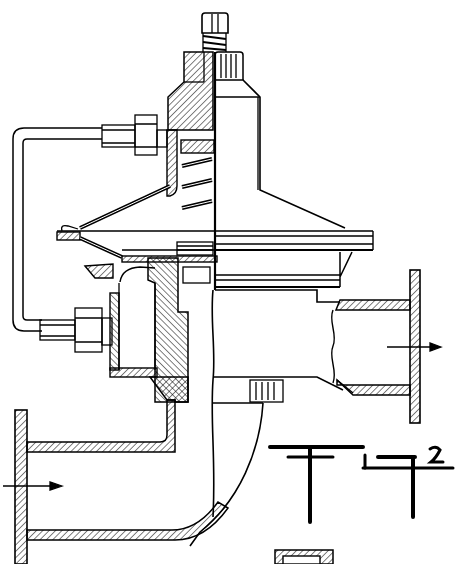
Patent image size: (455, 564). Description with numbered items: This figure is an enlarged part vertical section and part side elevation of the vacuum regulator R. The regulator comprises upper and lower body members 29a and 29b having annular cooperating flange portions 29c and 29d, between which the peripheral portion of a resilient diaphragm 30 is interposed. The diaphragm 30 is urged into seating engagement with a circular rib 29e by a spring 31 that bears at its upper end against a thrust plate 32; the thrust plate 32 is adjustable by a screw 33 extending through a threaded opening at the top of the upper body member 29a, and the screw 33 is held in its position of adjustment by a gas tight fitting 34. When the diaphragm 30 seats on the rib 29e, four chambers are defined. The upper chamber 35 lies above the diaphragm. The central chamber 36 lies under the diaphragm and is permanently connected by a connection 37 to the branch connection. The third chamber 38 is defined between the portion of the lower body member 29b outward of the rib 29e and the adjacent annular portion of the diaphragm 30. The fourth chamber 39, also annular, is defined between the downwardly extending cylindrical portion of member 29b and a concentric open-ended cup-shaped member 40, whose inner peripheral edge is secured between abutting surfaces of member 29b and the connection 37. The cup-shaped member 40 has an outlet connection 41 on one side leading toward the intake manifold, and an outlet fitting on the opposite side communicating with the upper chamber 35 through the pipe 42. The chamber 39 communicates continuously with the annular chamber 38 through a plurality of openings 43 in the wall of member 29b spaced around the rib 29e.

The screw 33 is at (229, 19).
The gas tight fitting 34 is at (244, 68).
The spring 31 is at (216, 178).
The regulator R is at (274, 189).
The upper chamber 35 is at (165, 204).
The thrust plate 32 is at (215, 148).
The upper body member 29a is at (128, 205).
The flange portion 29c is at (57, 228).
The flange portion 29d is at (57, 238).
The resilient diaphragm 30 is at (112, 248).
The lower body member 29b is at (80, 246).
The circular rib 29e is at (144, 255).
The third chamber 38 is at (88, 270).
The central chamber 36 is at (212, 299).
The cup-shaped member 40 is at (333, 304).
The outlet connection 41 is at (353, 384).
The openings 43 is at (126, 282).
The fourth chamber 39 is at (133, 350).
The pipe 42 is at (16, 270).
The connection 37 is at (140, 462).